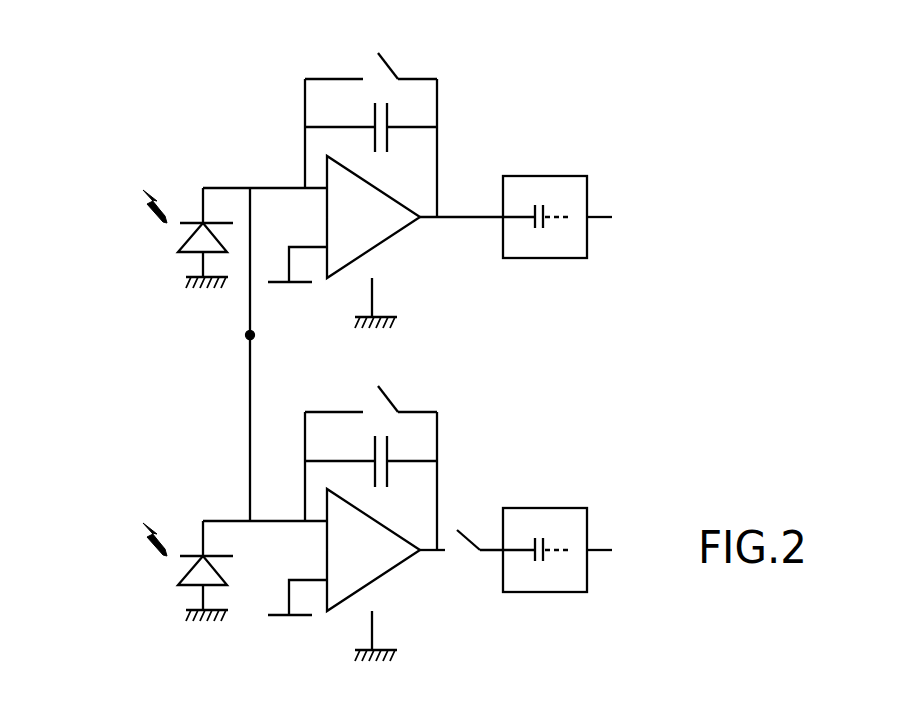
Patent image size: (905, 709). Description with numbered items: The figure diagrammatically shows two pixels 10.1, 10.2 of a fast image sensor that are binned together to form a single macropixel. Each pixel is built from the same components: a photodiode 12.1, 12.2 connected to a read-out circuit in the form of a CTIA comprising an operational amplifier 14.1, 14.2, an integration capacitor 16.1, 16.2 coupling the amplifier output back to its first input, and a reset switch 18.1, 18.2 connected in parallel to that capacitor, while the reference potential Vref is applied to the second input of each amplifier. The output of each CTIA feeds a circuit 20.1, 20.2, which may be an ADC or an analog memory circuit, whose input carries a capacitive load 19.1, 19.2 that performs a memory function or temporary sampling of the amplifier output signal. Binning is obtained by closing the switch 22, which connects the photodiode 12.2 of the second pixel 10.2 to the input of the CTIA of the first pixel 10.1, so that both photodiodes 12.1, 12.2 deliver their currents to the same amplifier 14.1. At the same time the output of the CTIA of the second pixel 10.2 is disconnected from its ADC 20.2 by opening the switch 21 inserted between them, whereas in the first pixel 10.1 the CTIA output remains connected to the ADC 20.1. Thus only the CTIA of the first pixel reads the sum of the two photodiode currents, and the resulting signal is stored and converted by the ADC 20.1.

The first pixel 10.1 is at (584, 93).
The second pixel 10.2 is at (584, 421).
The photodiode of first pixel 12.1 is at (187, 242).
The photodiode of second pixel 12.2 is at (187, 575).
The operational amplifier of first pixel 14.1 is at (380, 232).
The operational amplifier of second pixel 14.2 is at (380, 565).
The integration capacitor of first pixel 16.1 is at (387, 113).
The integration capacitor of second pixel 16.2 is at (387, 447).
The reset switch of first pixel 18.1 is at (378, 53).
The reset switch of second pixel 18.2 is at (378, 386).
The capacitive load of first pixel 19.1 is at (533, 219).
The capacitive load of second pixel 19.2 is at (533, 552).
The ADC of first pixel 20.1 is at (566, 183).
The ADC of second pixel 20.2 is at (566, 516).
The switch 21 is at (470, 532).
The switch 22 is at (247, 343).